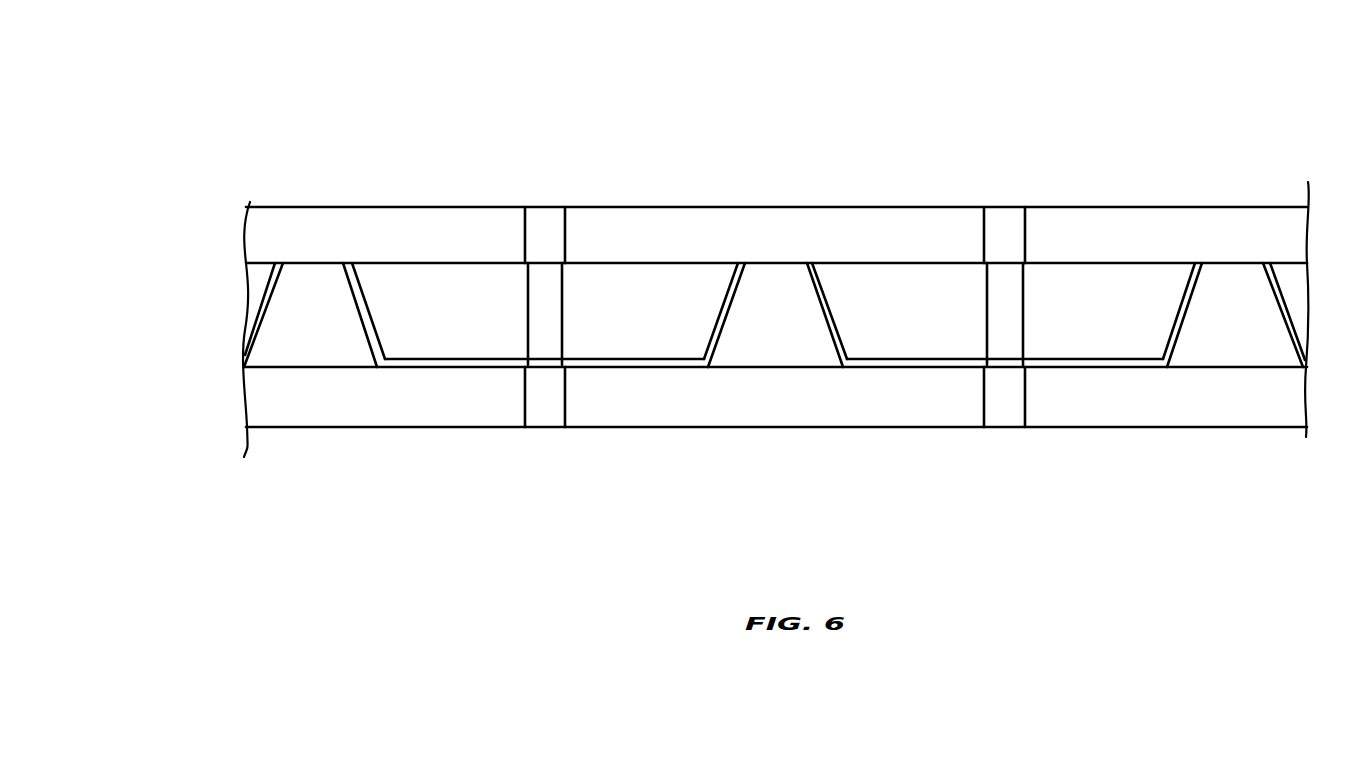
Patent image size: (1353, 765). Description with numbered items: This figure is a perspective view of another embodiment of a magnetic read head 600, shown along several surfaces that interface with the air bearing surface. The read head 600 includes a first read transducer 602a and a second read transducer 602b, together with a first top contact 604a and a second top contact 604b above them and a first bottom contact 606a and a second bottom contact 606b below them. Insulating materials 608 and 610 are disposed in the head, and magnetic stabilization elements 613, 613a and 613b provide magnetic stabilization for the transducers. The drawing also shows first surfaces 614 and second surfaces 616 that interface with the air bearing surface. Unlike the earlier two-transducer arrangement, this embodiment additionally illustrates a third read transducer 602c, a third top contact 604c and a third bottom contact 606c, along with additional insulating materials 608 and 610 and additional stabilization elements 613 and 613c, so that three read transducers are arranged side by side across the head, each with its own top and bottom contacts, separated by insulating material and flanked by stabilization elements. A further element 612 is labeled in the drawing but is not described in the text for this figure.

The magnetic read head 600 is at (872, 70).
The first read transducer 602a is at (775, 253).
The second read transducer 602b is at (1248, 255).
The third read transducer 602c is at (320, 253).
The first top contact 604a is at (845, 230).
The second top contact 604b is at (1197, 237).
The third top contact 604c is at (388, 227).
The first bottom contact 606a is at (857, 417).
The second bottom contact 606b is at (1060, 408).
The third bottom contact 606c is at (400, 413).
The insulating material 608 is at (552, 225).
The insulating material 610 is at (537, 407).
The splice member 612 is at (670, 363).
The magnetic stabilization element 613 is at (505, 300).
The magnetic stabilization element 613a is at (622, 307).
The magnetic stabilization element 613b is at (1287, 277).
The magnetic stabilization element 613c is at (257, 302).
The first surface 614 is at (763, 263).
The second surface 616 is at (1192, 368).